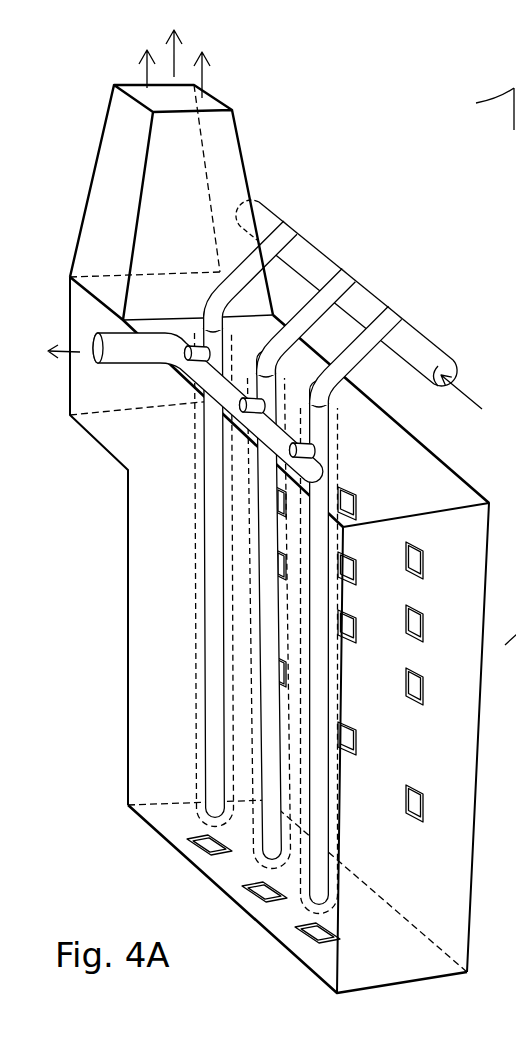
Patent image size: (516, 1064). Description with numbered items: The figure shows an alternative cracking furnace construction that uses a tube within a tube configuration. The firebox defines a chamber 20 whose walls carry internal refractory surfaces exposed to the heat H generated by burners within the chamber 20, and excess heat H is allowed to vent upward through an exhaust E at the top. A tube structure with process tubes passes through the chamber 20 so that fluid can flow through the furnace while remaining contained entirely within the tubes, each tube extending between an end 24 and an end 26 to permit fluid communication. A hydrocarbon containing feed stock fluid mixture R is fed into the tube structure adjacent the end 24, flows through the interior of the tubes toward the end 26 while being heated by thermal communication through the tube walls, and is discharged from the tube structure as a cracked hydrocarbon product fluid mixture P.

The firebox chamber 20 is at (114, 614).
The second end 24 is at (341, 266).
The first end 26 is at (113, 368).
The exhaust E is at (236, 124).
The heat H is at (178, 60).
The cracked hydrocarbon product fluid mixture P is at (67, 387).
The hydrocarbon containing feed stock fluid mixture R is at (458, 382).